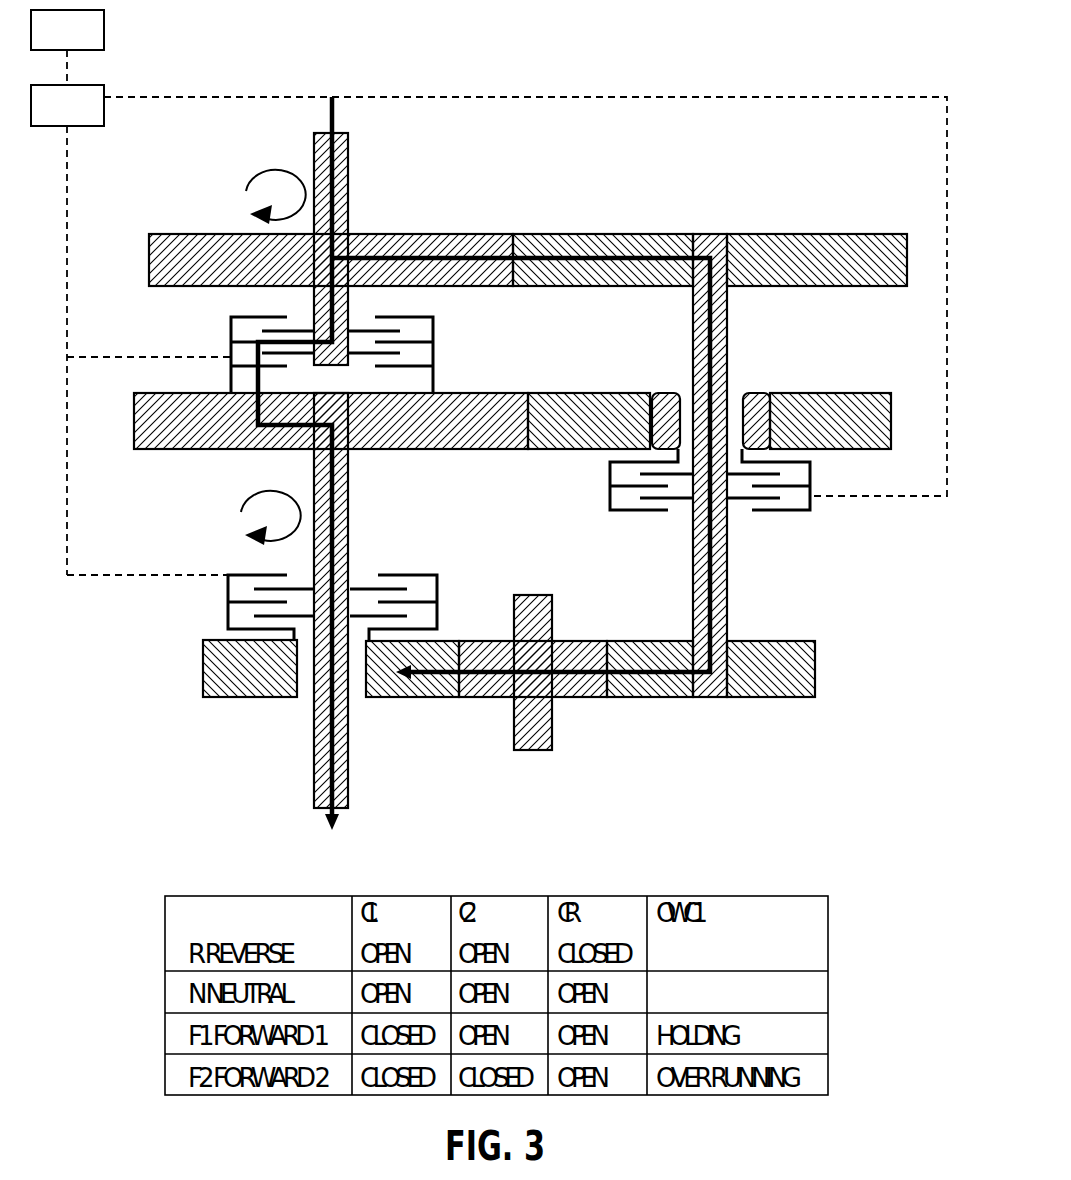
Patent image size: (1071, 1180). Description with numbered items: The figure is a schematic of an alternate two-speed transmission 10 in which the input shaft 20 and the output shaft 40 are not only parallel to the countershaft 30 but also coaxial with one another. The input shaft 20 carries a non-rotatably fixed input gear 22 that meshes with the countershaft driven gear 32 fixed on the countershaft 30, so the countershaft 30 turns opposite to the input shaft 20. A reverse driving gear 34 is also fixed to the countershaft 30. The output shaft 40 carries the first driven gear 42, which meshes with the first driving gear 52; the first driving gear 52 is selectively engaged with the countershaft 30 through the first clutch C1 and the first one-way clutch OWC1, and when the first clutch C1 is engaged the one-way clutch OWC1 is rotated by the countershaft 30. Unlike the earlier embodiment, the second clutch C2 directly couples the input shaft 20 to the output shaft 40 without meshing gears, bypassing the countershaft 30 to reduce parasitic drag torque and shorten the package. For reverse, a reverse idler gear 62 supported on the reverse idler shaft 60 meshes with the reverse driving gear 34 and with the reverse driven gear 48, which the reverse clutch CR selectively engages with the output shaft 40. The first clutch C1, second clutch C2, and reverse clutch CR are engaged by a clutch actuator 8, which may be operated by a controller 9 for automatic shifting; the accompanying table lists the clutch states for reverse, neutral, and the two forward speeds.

The clutch actuator 8 is at (67, 105).
The controller 9 is at (67, 30).
The transmission 10 is at (808, 78).
The input shaft 20 is at (337, 170).
The input gear 22 is at (450, 236).
The countershaft 30 is at (710, 236).
The countershaft driven gear 32 is at (875, 237).
The reverse driving gear 34 is at (800, 698).
The output shaft 40 is at (315, 778).
The first driven gear 42 is at (168, 451).
The reverse driven gear 48 is at (208, 680).
The first driving gear 52 is at (870, 399).
The reverse idler shaft 60 is at (545, 751).
The reverse idler gear 62 is at (580, 698).
The first clutch C1 is at (795, 512).
The second clutch C2 is at (231, 338).
The reverse clutch CR is at (228, 618).
The first one-way clutch OWC1 is at (757, 396).